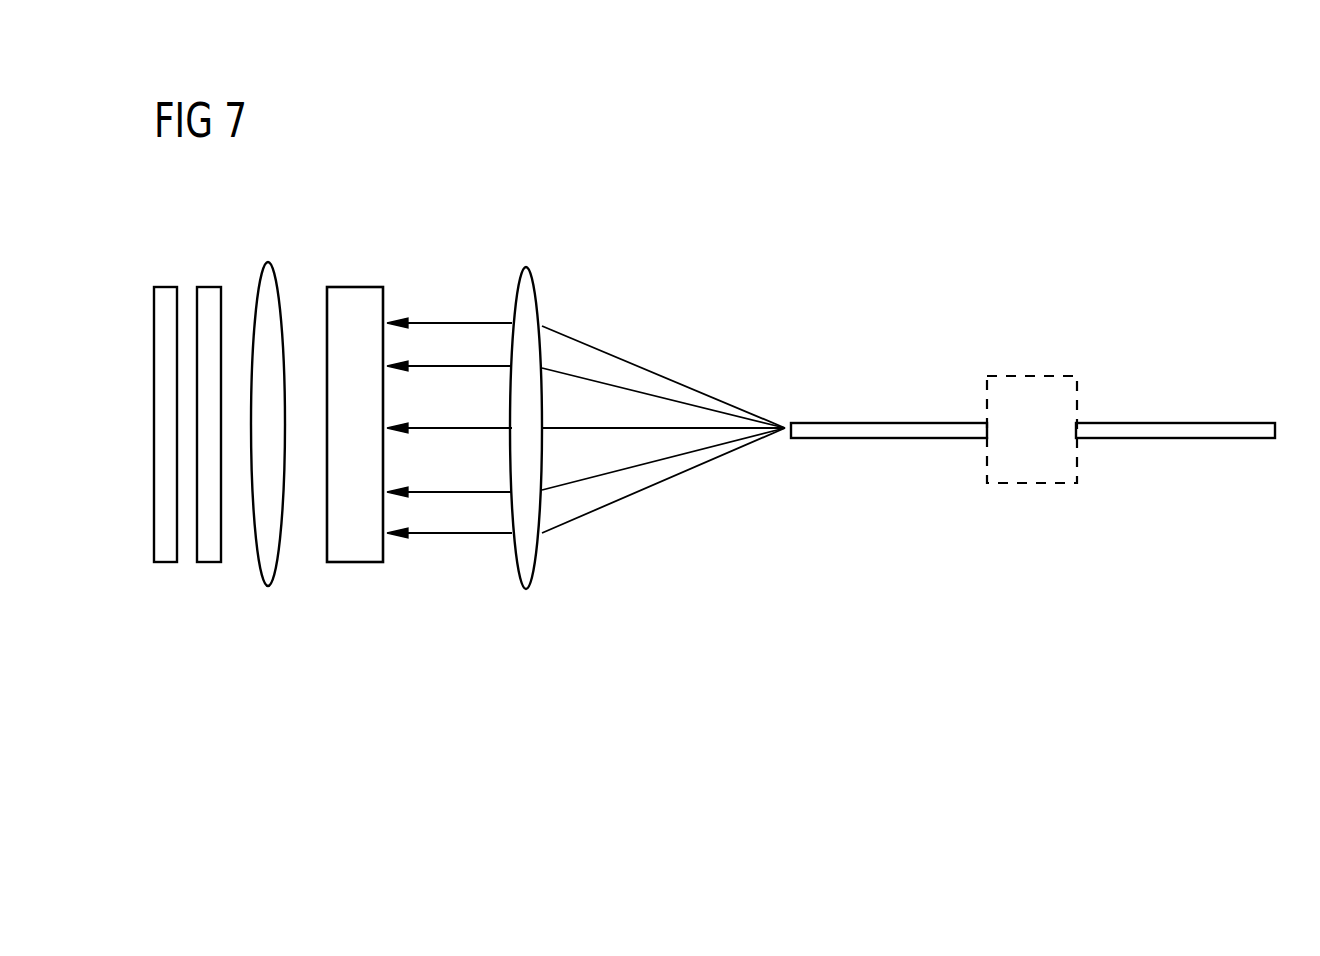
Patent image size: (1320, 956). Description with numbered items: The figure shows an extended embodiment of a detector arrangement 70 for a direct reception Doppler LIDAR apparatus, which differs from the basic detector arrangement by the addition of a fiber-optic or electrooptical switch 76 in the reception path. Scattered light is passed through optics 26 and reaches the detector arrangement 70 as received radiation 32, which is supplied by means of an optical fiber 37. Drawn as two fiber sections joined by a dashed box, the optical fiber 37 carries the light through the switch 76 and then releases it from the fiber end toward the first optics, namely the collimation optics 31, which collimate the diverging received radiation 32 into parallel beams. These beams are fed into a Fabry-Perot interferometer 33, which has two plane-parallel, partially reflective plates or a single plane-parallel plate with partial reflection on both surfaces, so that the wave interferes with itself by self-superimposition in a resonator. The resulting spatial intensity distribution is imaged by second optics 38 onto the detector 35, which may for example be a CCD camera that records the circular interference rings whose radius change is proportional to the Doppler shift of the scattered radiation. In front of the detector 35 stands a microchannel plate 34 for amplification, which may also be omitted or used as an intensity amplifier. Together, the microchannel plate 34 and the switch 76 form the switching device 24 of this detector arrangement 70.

The detector arrangement 70 is at (1080, 178).
The optics 26 is at (584, 222).
The switching device 24 is at (268, 617).
The collimation optics 31 is at (526, 267).
The received radiation 32 is at (458, 322).
The Fabry-Perot interferometer 33 is at (357, 287).
The microchannel plate 34 is at (210, 287).
The detector 35 is at (168, 287).
The second optics 38 is at (268, 262).
The optical fiber 37 is at (877, 422).
The fiber-optic or electrooptical switch 76 is at (1035, 376).